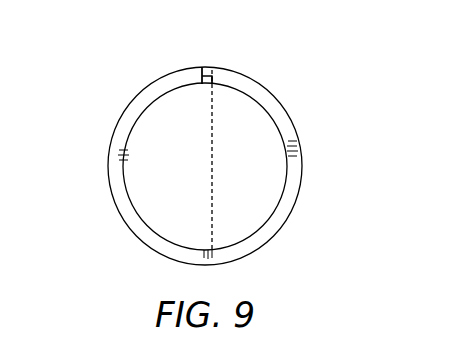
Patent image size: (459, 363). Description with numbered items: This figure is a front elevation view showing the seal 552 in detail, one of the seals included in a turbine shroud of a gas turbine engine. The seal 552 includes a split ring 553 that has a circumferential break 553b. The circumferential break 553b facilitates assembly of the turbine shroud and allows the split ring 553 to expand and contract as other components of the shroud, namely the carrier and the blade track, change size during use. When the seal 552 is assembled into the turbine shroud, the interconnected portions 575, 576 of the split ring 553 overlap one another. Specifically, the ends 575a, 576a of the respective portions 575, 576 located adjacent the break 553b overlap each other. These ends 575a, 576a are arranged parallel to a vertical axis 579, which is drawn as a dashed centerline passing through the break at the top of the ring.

The seal 552 is at (284, 64).
The split ring 553 is at (300, 131).
The circumferential break 553b is at (212, 56).
The interconnected portion 575 is at (120, 218).
The end 575a is at (224, 92).
The interconnected portion 576 is at (299, 180).
The end 576a is at (193, 65).
The vertical axis 579 is at (212, 163).